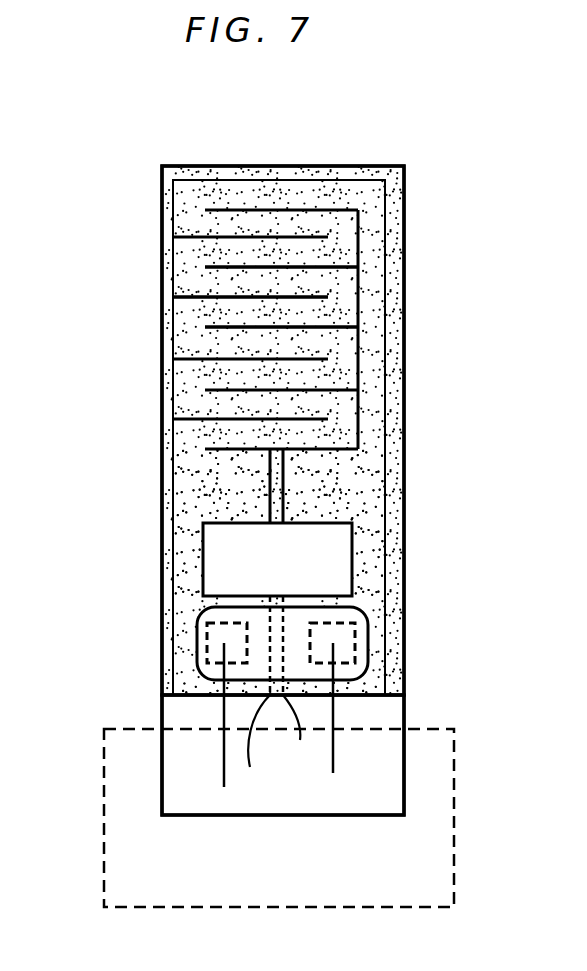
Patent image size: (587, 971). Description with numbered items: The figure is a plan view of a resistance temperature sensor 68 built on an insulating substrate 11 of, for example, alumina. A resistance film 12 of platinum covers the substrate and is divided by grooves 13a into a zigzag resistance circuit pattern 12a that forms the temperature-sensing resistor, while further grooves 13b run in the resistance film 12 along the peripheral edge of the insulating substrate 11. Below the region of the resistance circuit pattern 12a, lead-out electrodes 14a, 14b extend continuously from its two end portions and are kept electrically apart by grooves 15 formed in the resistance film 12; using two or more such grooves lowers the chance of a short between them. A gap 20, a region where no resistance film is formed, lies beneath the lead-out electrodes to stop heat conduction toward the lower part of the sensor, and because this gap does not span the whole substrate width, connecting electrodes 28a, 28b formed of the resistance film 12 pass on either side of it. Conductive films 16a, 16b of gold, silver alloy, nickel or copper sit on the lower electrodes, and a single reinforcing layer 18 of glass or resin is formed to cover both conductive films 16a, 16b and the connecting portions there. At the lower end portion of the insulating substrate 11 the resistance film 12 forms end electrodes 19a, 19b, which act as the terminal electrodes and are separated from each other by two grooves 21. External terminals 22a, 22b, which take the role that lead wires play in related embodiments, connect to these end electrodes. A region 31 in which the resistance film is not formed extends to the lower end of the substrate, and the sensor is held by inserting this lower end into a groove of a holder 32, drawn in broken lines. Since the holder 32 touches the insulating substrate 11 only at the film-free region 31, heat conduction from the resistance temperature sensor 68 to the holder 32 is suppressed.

The resistance temperature sensor 68 is at (483, 126).
The insulating substrate 11 is at (404, 193).
The resistance film 12 is at (365, 302).
The resistance circuit pattern 12a is at (318, 257).
The grooves 13a is at (203, 297).
The grooves 13b is at (190, 176).
The lead-out electrode 14a is at (210, 505).
The lead-out electrode 14b is at (318, 482).
The grooves 15 is at (268, 478).
The gap 20 is at (328, 553).
The connecting electrode 28a is at (183, 568).
The connecting electrode 28b is at (373, 568).
The conductive film 16a is at (212, 638).
The conductive film 16b is at (340, 627).
The reinforcing layer 18 is at (347, 652).
The end electrode 19a is at (180, 678).
The end electrode 19b is at (385, 687).
The region 31 is at (382, 710).
The holder 32 is at (455, 778).
The grooves 21 is at (279, 699).
The external terminal 22a is at (224, 733).
The external terminal 22b is at (333, 737).